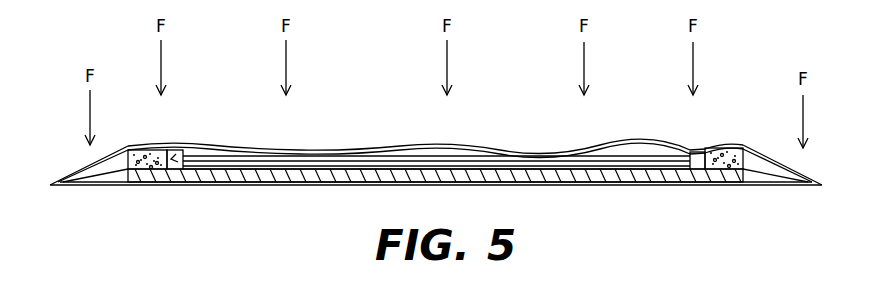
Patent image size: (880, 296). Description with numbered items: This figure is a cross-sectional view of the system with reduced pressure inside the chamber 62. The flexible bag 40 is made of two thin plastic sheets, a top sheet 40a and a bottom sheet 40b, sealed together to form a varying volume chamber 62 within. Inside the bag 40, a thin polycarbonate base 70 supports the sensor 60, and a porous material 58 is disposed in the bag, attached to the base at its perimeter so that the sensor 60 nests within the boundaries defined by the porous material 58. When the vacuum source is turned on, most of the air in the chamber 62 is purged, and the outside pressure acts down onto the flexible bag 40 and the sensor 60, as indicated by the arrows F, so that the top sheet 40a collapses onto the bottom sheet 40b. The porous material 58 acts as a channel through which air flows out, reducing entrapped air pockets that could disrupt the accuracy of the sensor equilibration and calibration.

The flexible bag 40 is at (436, 104).
The top sheet 40a is at (720, 143).
The bottom sheet 40b is at (773, 166).
The porous material 58 is at (153, 160).
The sensor 60 is at (400, 151).
The chamber 62 is at (174, 160).
The base 70 is at (285, 180).